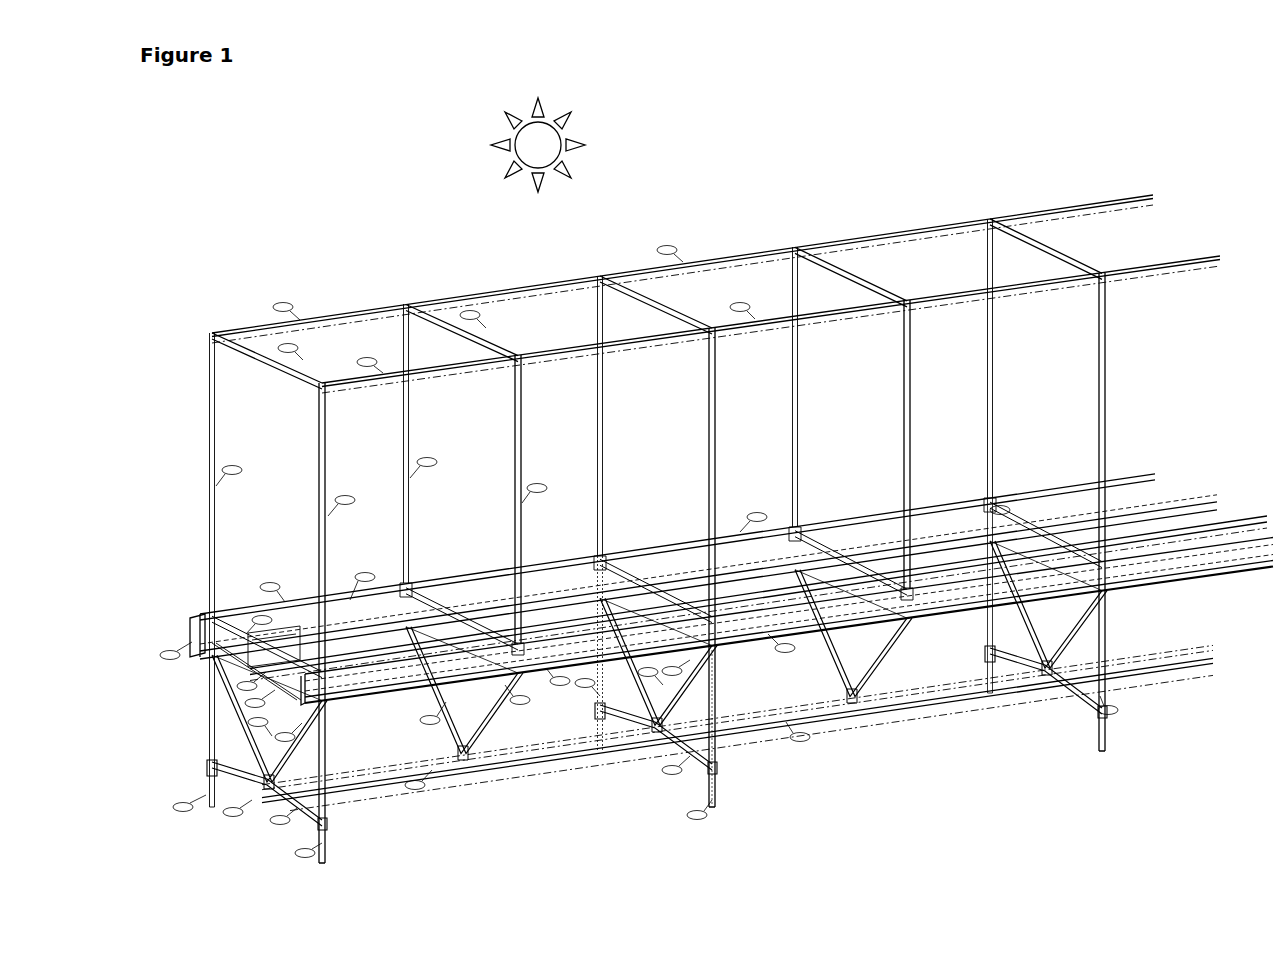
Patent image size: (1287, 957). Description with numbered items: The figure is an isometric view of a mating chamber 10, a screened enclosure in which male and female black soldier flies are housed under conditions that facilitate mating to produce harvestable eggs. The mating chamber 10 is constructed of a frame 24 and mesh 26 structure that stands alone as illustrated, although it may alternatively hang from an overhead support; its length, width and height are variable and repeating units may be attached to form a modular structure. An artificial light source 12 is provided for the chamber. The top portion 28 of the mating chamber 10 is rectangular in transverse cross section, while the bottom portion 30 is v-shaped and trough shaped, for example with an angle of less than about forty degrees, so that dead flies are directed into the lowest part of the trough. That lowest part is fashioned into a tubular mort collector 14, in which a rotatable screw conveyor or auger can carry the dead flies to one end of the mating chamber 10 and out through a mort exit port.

The mating chamber 10 is at (287, 240).
The artificial light source 12 is at (526, 155).
The mort collector 14 is at (227, 793).
The frame 24 is at (893, 230).
The mesh 26 is at (1115, 240).
The top portion 28 is at (1172, 362).
The bottom portion 30 is at (1181, 617).